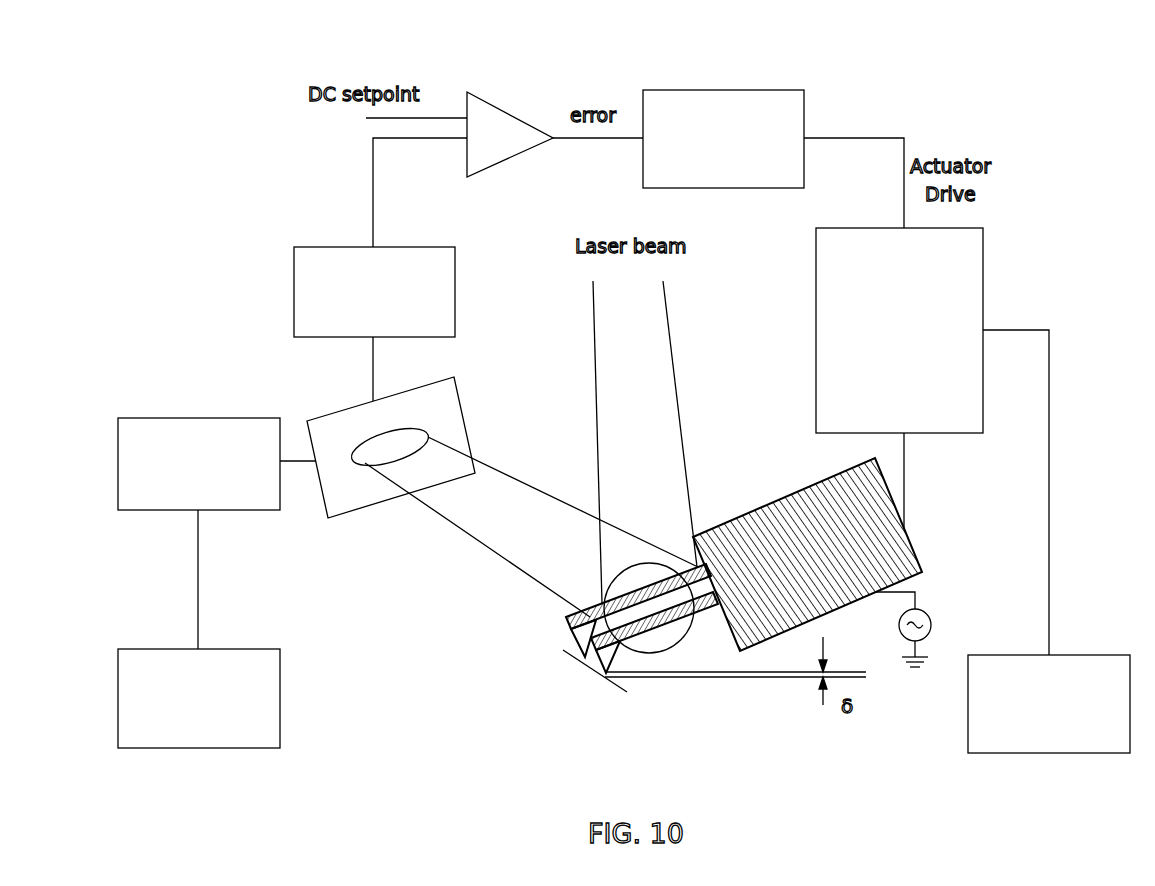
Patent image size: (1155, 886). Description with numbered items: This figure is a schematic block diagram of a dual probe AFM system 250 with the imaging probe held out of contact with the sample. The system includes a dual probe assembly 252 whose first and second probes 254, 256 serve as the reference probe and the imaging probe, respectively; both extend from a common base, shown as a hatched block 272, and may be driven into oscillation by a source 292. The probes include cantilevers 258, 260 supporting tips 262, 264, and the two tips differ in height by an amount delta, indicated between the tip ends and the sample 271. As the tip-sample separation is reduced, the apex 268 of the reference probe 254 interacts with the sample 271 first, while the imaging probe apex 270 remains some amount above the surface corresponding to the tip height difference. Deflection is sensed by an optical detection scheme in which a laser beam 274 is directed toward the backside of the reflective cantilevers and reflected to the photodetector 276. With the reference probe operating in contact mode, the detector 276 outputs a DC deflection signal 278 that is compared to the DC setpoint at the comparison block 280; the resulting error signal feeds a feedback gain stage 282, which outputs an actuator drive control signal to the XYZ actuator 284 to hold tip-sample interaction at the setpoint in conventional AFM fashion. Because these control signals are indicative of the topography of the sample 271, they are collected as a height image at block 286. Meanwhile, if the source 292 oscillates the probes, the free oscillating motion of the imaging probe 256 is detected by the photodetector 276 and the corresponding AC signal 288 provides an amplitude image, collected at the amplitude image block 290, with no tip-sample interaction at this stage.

The dual probe AFM system 250 is at (925, 65).
The dual probe assembly 252 is at (742, 470).
The first probe 254 is at (550, 600).
The second probe 256 is at (697, 651).
The cantilever 258 is at (628, 585).
The cantilever 260 is at (667, 637).
The tip 262 is at (570, 634).
The tip 264 is at (613, 657).
The apex 268 is at (590, 650).
The imaging probe apex 270 is at (610, 677).
The sample 271 is at (596, 660).
The probe holder block 272 is at (915, 540).
The laser beam 274 is at (670, 330).
The photodetector 276 is at (458, 383).
The DC deflection signal 278 is at (455, 300).
The DC setpoint comparison block 280 is at (505, 168).
The feedback gain stage 282 is at (703, 90).
The actuator 284 is at (984, 268).
The topography collection block 286 is at (1080, 655).
The AC signal 288 is at (234, 510).
The amplitude image 290 is at (226, 649).
The source 292 is at (933, 615).